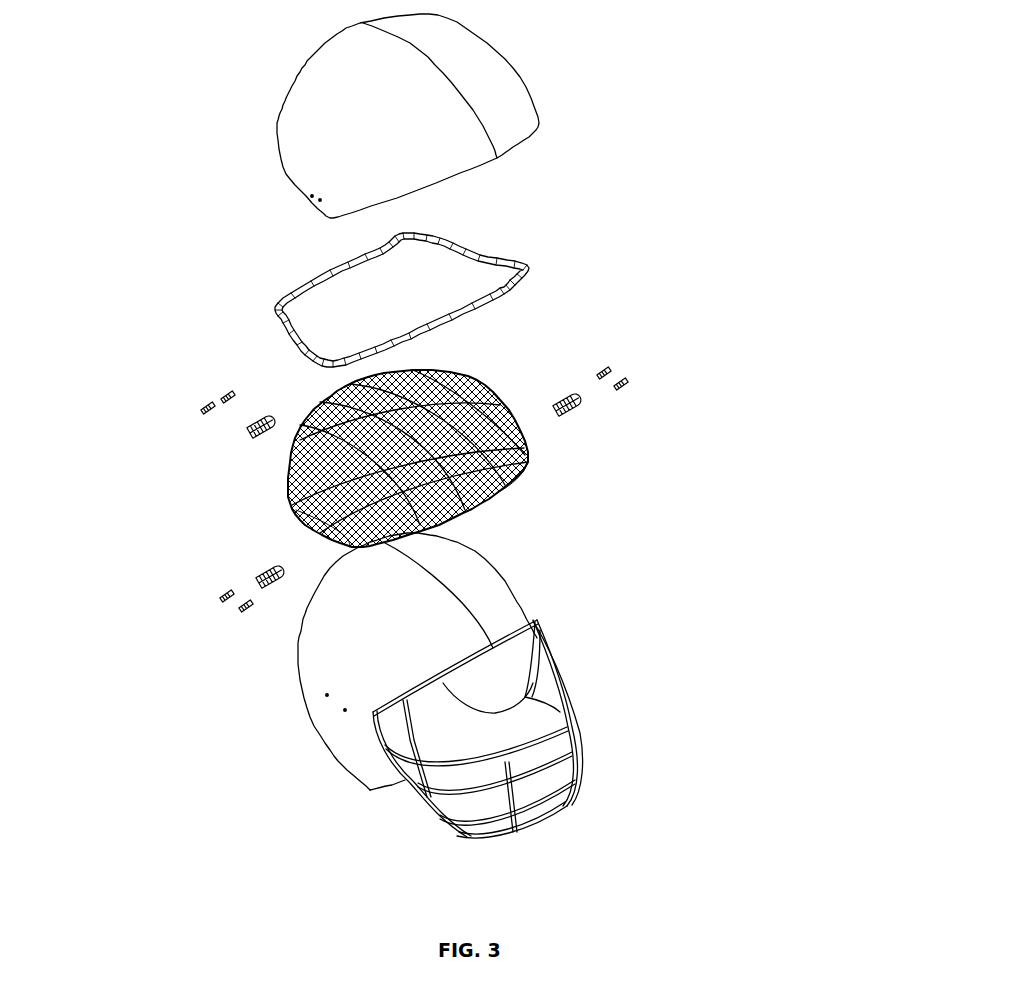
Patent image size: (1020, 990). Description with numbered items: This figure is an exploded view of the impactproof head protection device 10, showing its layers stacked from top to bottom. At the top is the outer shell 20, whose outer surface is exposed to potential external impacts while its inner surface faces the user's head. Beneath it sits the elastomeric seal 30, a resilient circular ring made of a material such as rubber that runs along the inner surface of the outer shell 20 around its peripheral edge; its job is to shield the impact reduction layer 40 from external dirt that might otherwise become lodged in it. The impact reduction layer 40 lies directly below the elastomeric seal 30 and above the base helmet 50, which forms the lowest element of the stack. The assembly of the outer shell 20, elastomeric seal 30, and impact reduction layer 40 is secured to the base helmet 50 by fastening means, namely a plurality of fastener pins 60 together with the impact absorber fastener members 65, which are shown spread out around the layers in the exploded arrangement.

The impactproof head protection device 10 is at (238, 215).
The outer shell 20 is at (570, 97).
The elastomeric seal 30 is at (570, 263).
The impact reduction layer 40 is at (558, 481).
The base helmet 50 is at (578, 605).
The fastener pins 60 is at (635, 351).
The impact absorber fastener members 65 is at (610, 425).